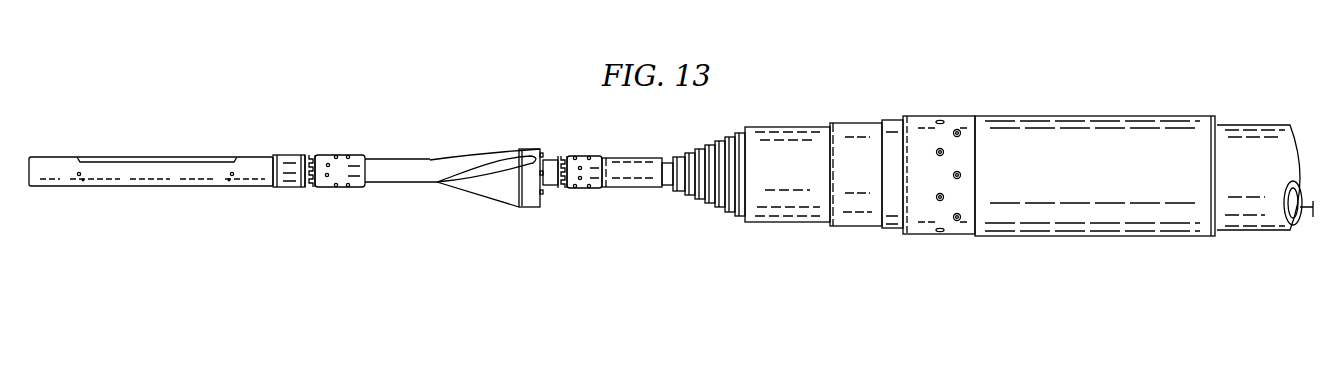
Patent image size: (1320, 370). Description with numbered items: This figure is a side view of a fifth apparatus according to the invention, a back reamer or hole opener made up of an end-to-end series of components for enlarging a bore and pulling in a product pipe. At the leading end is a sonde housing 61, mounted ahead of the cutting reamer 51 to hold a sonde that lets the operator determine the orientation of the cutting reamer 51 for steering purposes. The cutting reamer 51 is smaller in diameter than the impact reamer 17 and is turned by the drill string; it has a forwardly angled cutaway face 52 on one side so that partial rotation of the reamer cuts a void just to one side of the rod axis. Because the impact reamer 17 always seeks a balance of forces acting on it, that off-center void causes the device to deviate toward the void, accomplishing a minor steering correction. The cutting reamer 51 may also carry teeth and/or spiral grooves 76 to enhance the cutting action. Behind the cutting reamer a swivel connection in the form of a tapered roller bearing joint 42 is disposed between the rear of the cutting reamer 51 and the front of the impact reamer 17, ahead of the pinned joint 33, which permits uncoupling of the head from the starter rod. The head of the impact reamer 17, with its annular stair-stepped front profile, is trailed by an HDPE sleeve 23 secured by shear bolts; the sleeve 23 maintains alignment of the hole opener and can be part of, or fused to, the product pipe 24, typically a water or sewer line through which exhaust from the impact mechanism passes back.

The impact reamer 17 is at (925, 85).
The sleeve 23 is at (1102, 123).
The pipe 24 is at (1255, 135).
The pinned joint 33 is at (308, 153).
The tapered roller bearing joint 42 is at (566, 208).
The cutting reamer 51 is at (528, 206).
The cutaway face 52 is at (482, 153).
The sonde housing 61 is at (148, 178).
The teeth and/or spiral grooves 76 is at (480, 187).